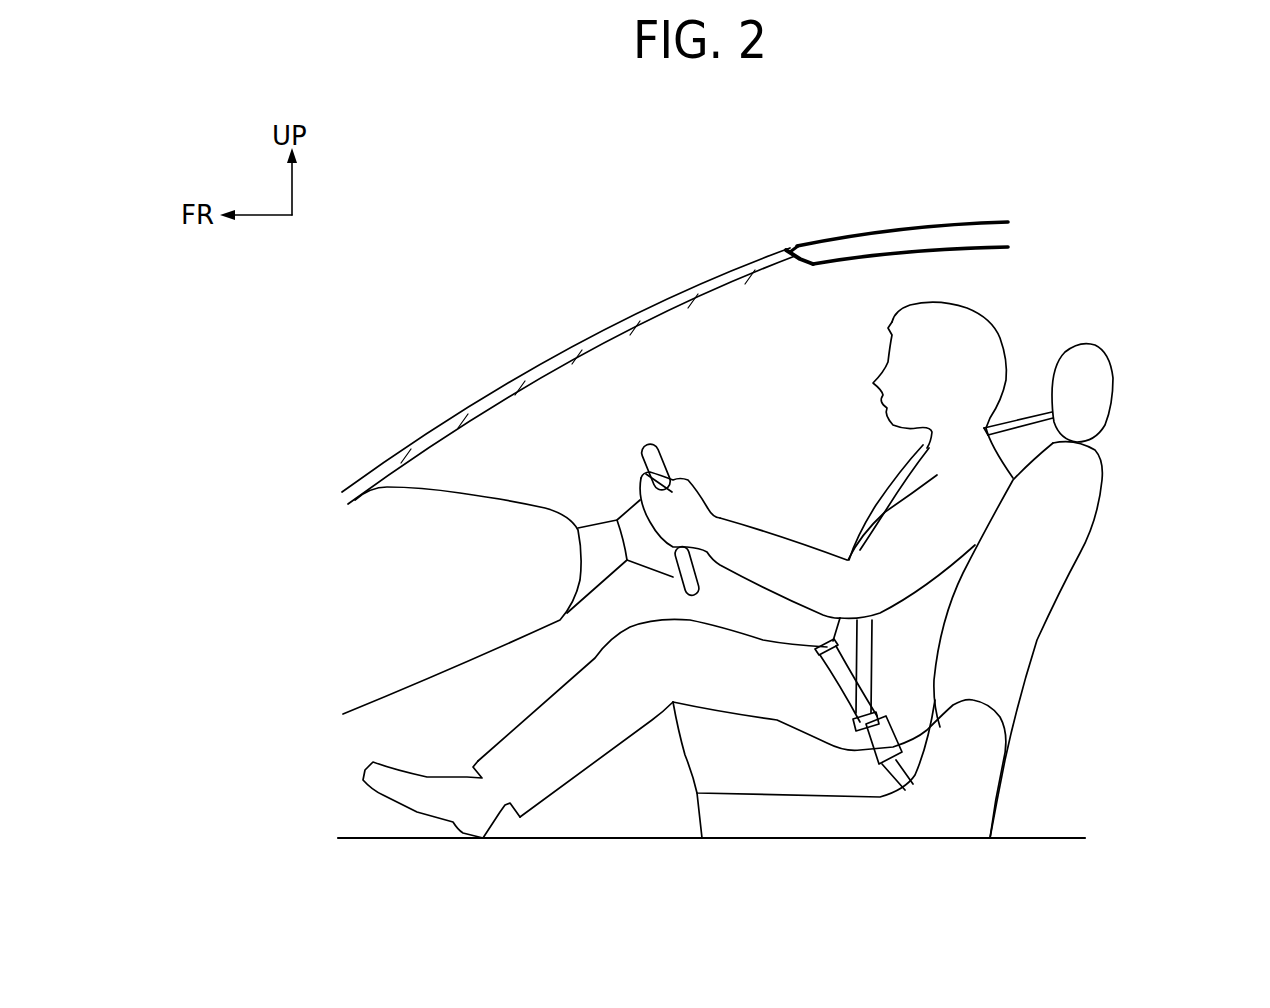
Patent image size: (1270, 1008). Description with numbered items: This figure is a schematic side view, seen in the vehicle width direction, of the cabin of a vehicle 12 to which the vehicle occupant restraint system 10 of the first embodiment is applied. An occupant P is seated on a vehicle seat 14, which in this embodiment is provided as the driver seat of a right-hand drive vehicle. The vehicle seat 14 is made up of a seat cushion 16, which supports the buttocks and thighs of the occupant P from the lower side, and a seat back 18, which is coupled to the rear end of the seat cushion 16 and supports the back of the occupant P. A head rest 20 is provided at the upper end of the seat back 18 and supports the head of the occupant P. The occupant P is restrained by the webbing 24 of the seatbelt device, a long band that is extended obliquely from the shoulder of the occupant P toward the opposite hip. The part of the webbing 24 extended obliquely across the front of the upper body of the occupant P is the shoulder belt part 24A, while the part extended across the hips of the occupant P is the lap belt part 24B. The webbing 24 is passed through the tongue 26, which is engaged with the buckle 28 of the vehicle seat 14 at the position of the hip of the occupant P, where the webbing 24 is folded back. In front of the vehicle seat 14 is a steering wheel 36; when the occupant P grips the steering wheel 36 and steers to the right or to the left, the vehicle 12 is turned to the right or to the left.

The vehicle occupant restraint system 10 is at (675, 455).
The vehicle 12 is at (634, 307).
The vehicle seat 14 is at (915, 584).
The seat cushion 16 is at (676, 752).
The seat back 18 is at (1069, 566).
The head rest 20 is at (1116, 366).
The webbing 24 is at (901, 601).
The shoulder belt part 24A is at (885, 488).
The lap belt part 24B is at (830, 677).
The tongue 26 is at (870, 720).
The buckle 28 is at (867, 765).
The steering wheel 36 is at (649, 446).
The occupant P is at (1000, 312).